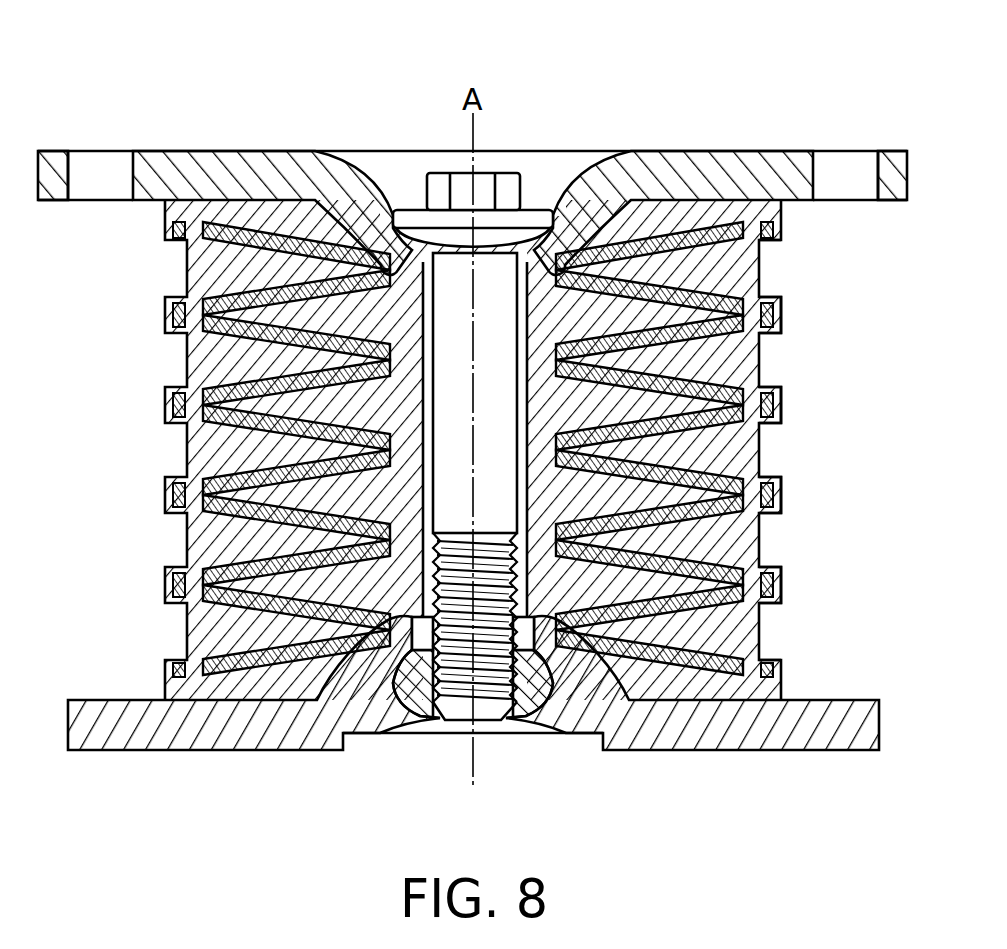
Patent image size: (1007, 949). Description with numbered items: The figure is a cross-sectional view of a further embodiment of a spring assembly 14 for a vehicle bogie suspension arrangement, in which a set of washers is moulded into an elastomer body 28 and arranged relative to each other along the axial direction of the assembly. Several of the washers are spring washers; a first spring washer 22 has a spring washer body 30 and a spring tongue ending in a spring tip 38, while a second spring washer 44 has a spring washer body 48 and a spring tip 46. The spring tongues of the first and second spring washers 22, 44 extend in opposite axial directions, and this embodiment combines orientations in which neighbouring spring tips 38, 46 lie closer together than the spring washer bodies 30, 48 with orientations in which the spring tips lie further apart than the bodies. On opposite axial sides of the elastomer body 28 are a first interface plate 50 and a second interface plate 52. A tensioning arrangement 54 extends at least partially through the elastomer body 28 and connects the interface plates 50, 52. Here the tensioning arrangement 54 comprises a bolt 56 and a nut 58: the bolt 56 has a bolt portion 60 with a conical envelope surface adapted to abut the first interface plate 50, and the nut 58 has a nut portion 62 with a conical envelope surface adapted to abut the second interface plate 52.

The spring assembly 14 is at (272, 64).
The first spring washer 22 is at (690, 445).
The elastomer body 28 is at (693, 265).
The spring washer body 30 is at (778, 497).
The spring tip 38 is at (545, 447).
The second spring washer 44 is at (690, 545).
The spring tip 46 is at (580, 565).
The spring washer body 48 is at (780, 503).
The first interface plate 50 is at (708, 151).
The second interface plate 52 is at (712, 751).
The tensioning arrangement 54 is at (398, 772).
The bolt 56 is at (403, 125).
The nut 58 is at (527, 735).
The bolt portion 60 is at (535, 215).
The nut portion 62 is at (540, 700).